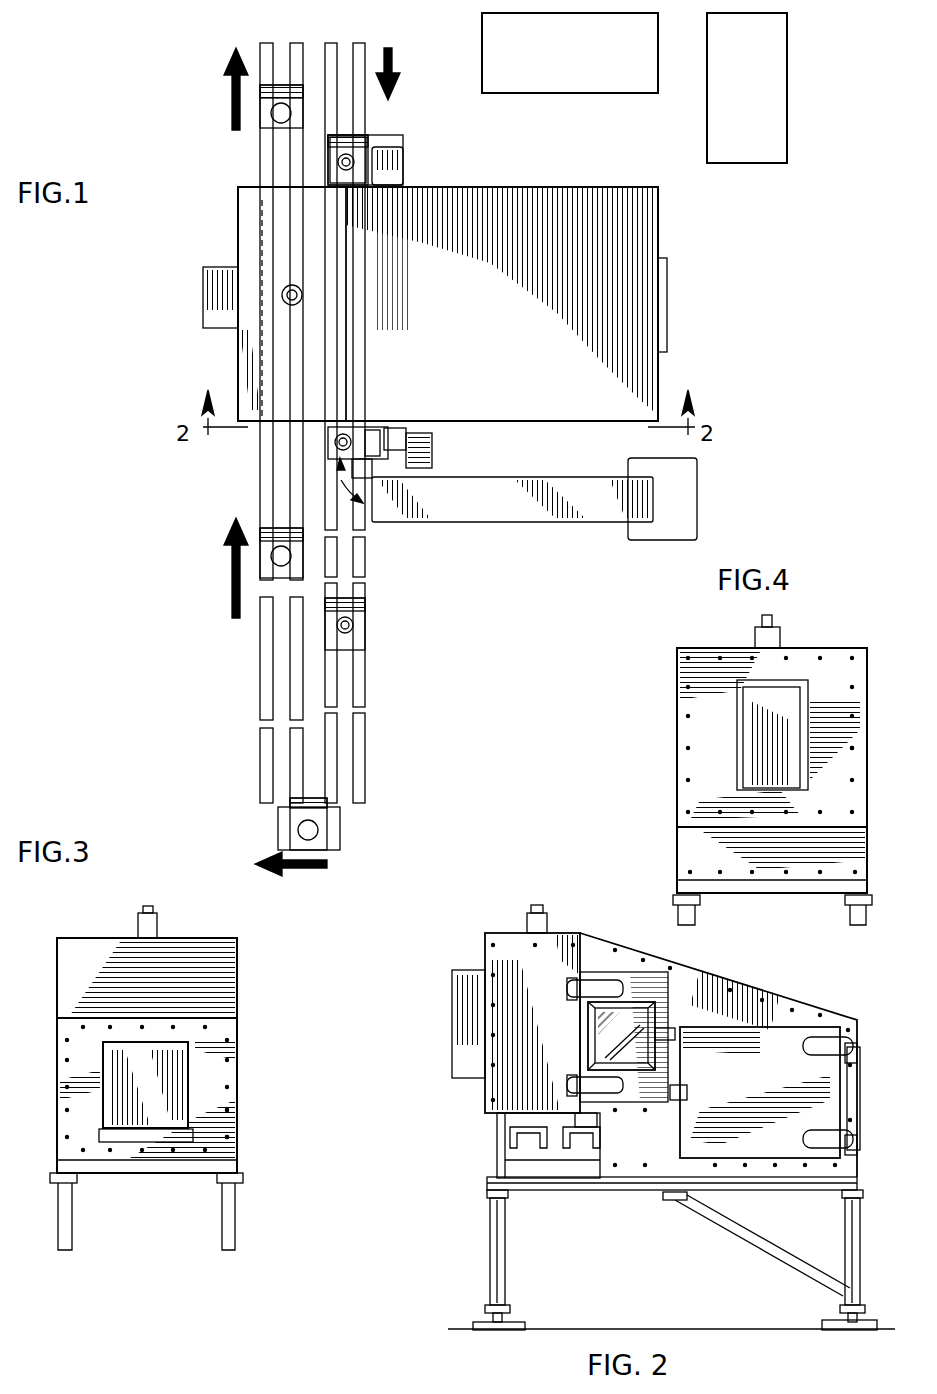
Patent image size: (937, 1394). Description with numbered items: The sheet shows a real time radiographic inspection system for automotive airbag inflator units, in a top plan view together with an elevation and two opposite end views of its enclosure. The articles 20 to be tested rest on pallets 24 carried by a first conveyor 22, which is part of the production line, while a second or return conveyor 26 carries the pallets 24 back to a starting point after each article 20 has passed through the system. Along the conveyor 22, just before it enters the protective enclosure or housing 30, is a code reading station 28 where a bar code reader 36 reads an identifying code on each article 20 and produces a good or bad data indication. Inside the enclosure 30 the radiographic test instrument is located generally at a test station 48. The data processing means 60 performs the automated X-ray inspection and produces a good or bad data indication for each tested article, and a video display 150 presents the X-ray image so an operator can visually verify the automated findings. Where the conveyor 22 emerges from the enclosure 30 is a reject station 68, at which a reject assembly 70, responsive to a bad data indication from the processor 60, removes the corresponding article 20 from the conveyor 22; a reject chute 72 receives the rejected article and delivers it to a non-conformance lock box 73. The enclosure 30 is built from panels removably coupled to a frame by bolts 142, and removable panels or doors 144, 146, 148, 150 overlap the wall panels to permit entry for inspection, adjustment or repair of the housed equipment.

In FIG. 1, the articles 20 is at (340, 160).
In FIG. 1, the first conveyor 22 is at (360, 43).
In FIG. 1, the pallets 24 is at (362, 140).
In FIG. 1, the return conveyor 26 is at (268, 182).
In FIG. 1, the code reading station 28 is at (400, 140).
In FIG. 1, the enclosure 30 is at (466, 320).
In FIG. 4, the enclosure 30 is at (668, 786).
In FIG. 3, the enclosure 30 is at (248, 982).
In FIG. 2, the enclosure 30 is at (478, 950).
In FIG. 1, the bar code reader 36 is at (403, 165).
In FIG. 1, the test station 48 is at (264, 233).
In FIG. 1, the data processing means 60 is at (578, 60).
In FIG. 1, the reject station 68 is at (520, 458).
In FIG. 1, the reject assembly 70 is at (412, 432).
In FIG. 1, the reject chute 72 is at (461, 508).
In FIG. 1, the lock box 73 is at (682, 503).
In FIG. 4, the bolts 142 is at (852, 740).
In FIG. 3, the bolts 142 is at (232, 1108).
In FIG. 2, the bolts 142 is at (792, 1008).
In FIG. 1, the removable panel 144 is at (205, 297).
In FIG. 4, the removable panel 144 is at (778, 693).
In FIG. 2, the removable panel 144 is at (470, 1026).
In FIG. 1, the removable panel 146 is at (667, 307).
In FIG. 3, the removable panel 146 is at (180, 1076).
In FIG. 2, the removable panel 148 is at (595, 1037).
In FIG. 1, the video display 150 is at (760, 98).
In FIG. 2, the video display 150 is at (777, 1053).